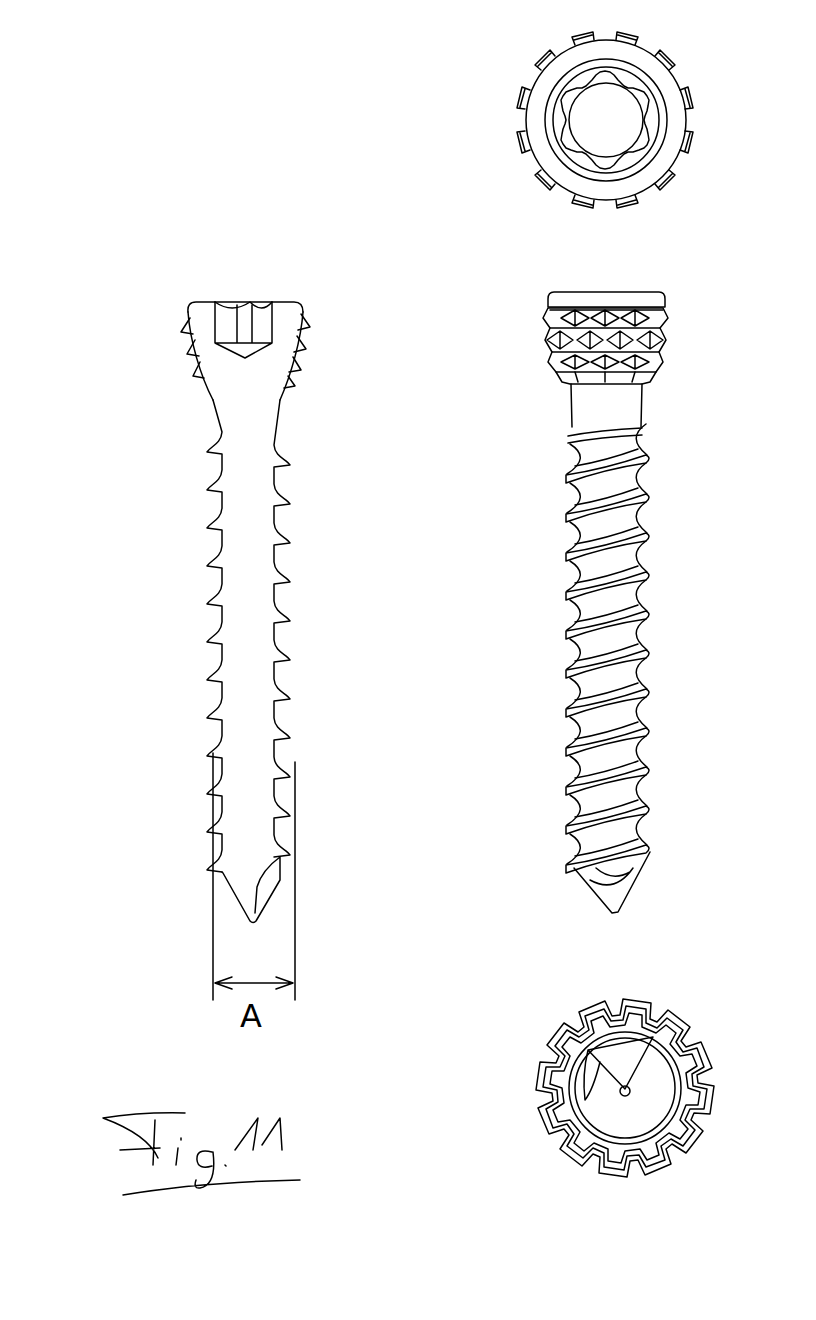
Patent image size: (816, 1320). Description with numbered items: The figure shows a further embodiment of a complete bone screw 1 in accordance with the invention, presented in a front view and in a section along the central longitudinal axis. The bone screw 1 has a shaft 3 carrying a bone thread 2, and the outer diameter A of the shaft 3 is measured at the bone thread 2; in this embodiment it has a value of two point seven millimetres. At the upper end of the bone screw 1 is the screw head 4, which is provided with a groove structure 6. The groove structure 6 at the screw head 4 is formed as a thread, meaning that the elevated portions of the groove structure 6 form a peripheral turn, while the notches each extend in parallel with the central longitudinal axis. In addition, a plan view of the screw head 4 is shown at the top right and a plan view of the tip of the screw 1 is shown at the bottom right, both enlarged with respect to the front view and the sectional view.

The bone screw 1 is at (146, 218).
The bone thread 2 is at (288, 528).
The shaft 3 is at (258, 610).
The screw head 4 is at (300, 299).
The groove structure 6 is at (175, 376).